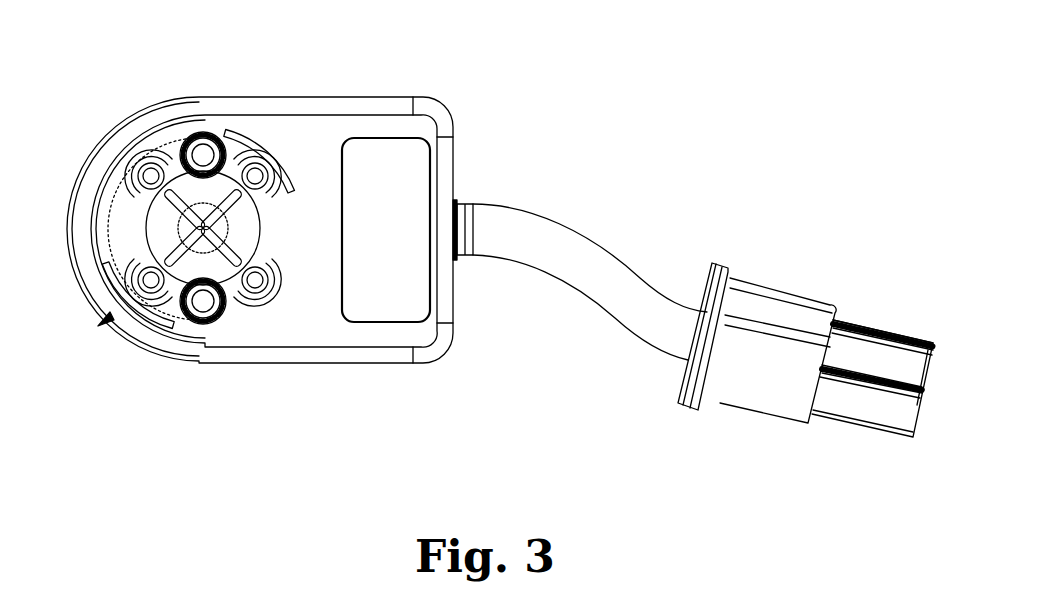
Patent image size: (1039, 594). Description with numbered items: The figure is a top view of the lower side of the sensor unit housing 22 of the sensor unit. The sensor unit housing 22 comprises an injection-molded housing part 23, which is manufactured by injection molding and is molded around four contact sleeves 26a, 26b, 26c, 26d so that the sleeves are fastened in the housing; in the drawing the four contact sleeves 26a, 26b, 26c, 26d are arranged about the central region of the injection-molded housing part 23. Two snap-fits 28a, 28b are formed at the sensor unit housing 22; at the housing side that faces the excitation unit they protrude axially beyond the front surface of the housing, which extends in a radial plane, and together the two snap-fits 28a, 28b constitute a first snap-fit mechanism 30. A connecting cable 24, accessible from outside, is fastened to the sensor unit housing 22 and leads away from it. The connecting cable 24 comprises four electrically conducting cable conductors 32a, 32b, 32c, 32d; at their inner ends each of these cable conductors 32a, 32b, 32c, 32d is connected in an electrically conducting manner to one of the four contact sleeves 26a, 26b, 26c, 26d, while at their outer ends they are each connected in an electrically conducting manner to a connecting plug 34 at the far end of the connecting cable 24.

The sensor unit housing 22 is at (452, 104).
The injection-molded housing part 23 is at (135, 229).
The connecting cable 24 is at (557, 247).
The contact sleeve 26a is at (140, 172).
The contact sleeve 26b is at (259, 166).
The contact sleeve 26c is at (268, 292).
The contact sleeve 26d is at (140, 283).
The snap-fit 28a is at (306, 125).
The snap-fit 28b is at (110, 352).
The first snap-fit mechanism 30 is at (100, 323).
The cable conductor 32a is at (152, 128).
The cable conductor 32b is at (292, 165).
The cable conductor 32c is at (241, 338).
The cable conductor 32d is at (183, 360).
The connecting plug 34 is at (768, 273).